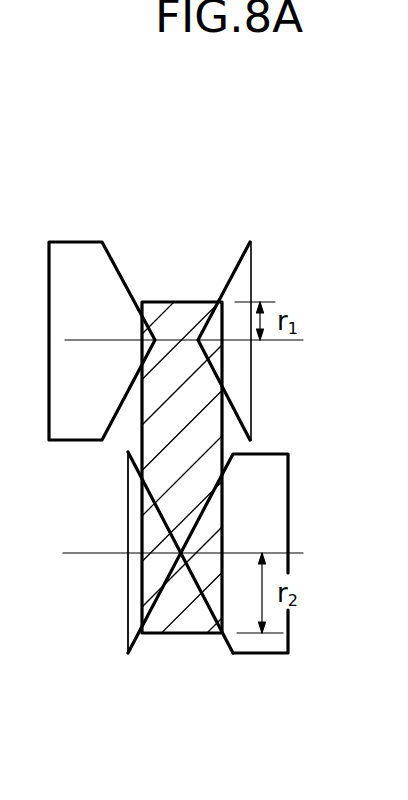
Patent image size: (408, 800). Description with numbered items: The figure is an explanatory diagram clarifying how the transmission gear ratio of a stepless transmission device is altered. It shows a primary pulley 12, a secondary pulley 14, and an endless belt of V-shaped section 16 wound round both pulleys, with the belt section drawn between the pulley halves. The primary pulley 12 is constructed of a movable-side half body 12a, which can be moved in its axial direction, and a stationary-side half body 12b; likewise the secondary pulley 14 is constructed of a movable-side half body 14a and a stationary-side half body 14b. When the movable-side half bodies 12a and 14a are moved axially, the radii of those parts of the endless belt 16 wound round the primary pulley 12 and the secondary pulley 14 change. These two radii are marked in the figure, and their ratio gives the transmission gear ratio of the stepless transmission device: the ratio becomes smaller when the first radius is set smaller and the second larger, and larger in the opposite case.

The primary pulley 12 is at (183, 273).
The movable-side half body 12a is at (115, 258).
The stationary-side half body 12b is at (254, 258).
The secondary pulley 14 is at (215, 605).
The movable-side half body 14a is at (280, 488).
The stationary-side half body 14b is at (152, 578).
The endless belt of V-shaped section 16 is at (183, 302).